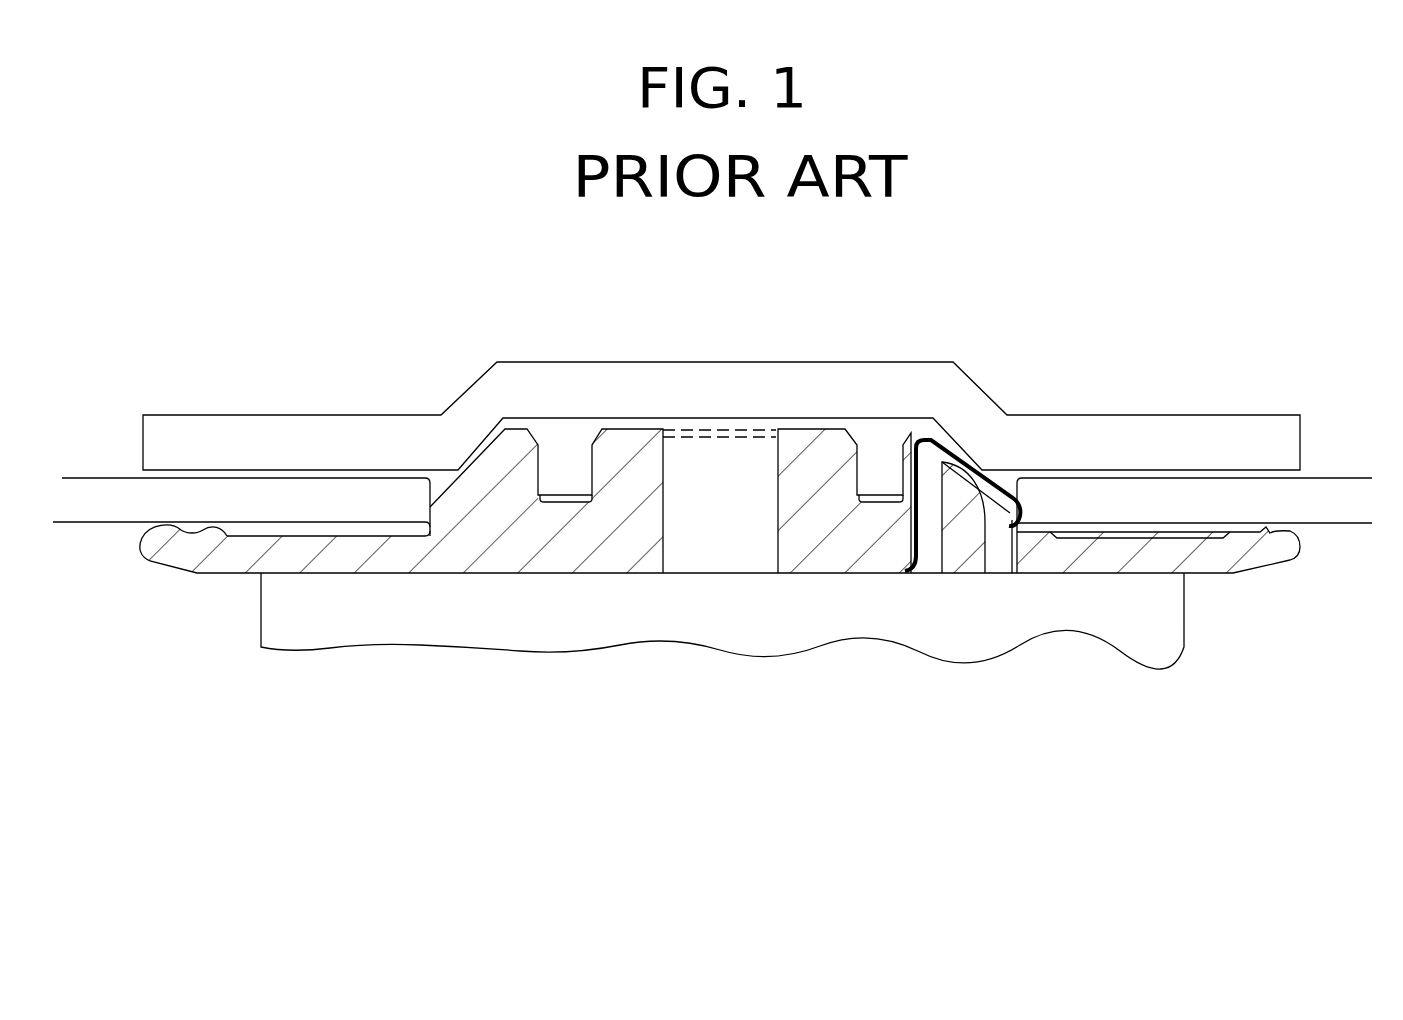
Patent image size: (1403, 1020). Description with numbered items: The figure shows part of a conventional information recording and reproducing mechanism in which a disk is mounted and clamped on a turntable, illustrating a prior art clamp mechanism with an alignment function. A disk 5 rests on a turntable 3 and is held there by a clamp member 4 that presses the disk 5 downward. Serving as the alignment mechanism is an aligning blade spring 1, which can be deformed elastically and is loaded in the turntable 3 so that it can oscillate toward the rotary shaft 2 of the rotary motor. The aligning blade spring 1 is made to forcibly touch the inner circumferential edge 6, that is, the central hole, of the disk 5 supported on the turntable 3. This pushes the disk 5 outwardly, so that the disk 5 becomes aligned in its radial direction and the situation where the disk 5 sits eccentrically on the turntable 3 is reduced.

The aligning blade spring 1 is at (968, 467).
The rotary shaft 2 is at (738, 470).
The turntable 3 is at (217, 563).
The clamp member 4 is at (656, 374).
The disk 5 is at (317, 480).
The inner circumferential edge 6 is at (1016, 482).